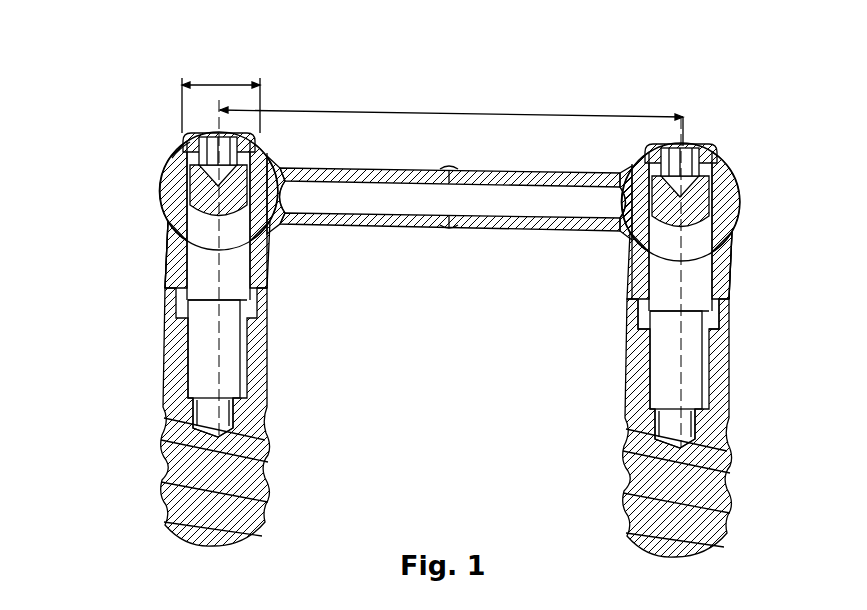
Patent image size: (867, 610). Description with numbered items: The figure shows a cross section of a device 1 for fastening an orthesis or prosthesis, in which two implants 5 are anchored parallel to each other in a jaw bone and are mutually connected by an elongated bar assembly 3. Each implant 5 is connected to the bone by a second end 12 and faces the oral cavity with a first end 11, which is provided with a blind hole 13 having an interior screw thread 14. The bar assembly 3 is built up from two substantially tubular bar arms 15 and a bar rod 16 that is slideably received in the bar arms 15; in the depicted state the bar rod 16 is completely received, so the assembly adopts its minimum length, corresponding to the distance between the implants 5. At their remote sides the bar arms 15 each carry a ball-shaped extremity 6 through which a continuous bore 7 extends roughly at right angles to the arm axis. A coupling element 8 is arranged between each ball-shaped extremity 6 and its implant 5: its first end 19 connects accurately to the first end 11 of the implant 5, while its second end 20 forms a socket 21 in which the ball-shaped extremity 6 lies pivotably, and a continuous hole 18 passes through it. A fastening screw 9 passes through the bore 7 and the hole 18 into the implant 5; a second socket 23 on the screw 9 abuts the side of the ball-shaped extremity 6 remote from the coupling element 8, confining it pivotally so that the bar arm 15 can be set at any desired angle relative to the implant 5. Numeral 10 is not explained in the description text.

The device 1 is at (540, 88).
The bar assembly 3 is at (450, 223).
The implant 5 is at (448, 422).
The ball-shaped extremity 6 is at (448, 196).
The continuous bore 7 is at (633, 238).
The coupling element 8 is at (450, 240).
The fastening screw 9 is at (450, 135).
The spherical socket surface 10 is at (172, 160).
The first end 11 is at (614, 326).
The second end 12 is at (605, 496).
The blind hole 13 is at (660, 365).
The interior screw thread 14 is at (663, 396).
The bar arm 15 is at (372, 170).
The bar rod 16 is at (422, 197).
The continuous hole 18 is at (627, 288).
The first end 19 is at (158, 292).
The second end 20 is at (158, 230).
The socket 21 is at (228, 238).
The second socket 23 is at (262, 155).